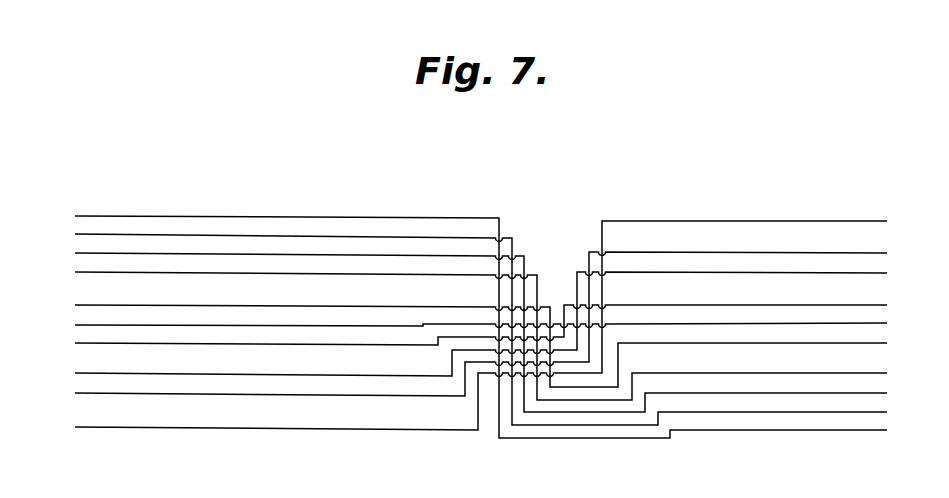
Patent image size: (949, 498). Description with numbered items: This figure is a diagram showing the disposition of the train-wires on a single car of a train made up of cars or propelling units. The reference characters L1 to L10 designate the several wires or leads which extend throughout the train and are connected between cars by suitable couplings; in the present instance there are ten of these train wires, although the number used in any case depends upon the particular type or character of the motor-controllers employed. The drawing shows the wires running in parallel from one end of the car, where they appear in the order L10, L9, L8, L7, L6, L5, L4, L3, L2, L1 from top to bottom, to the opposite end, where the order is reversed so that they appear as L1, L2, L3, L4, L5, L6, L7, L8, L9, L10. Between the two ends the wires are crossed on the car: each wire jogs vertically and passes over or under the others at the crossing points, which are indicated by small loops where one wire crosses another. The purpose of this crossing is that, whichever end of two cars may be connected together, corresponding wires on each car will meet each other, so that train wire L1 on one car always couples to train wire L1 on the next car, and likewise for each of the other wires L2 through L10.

The train wire L1 is at (474, 323).
The train wire L2 is at (474, 322).
The train wire L3 is at (474, 322).
The train wire L4 is at (474, 323).
The train wire L5 is at (474, 323).
The train wire L6 is at (474, 339).
The train wire L7 is at (475, 329).
The train wire L8 is at (474, 325).
The train wire L9 is at (474, 322).
The train wire L10 is at (478, 322).